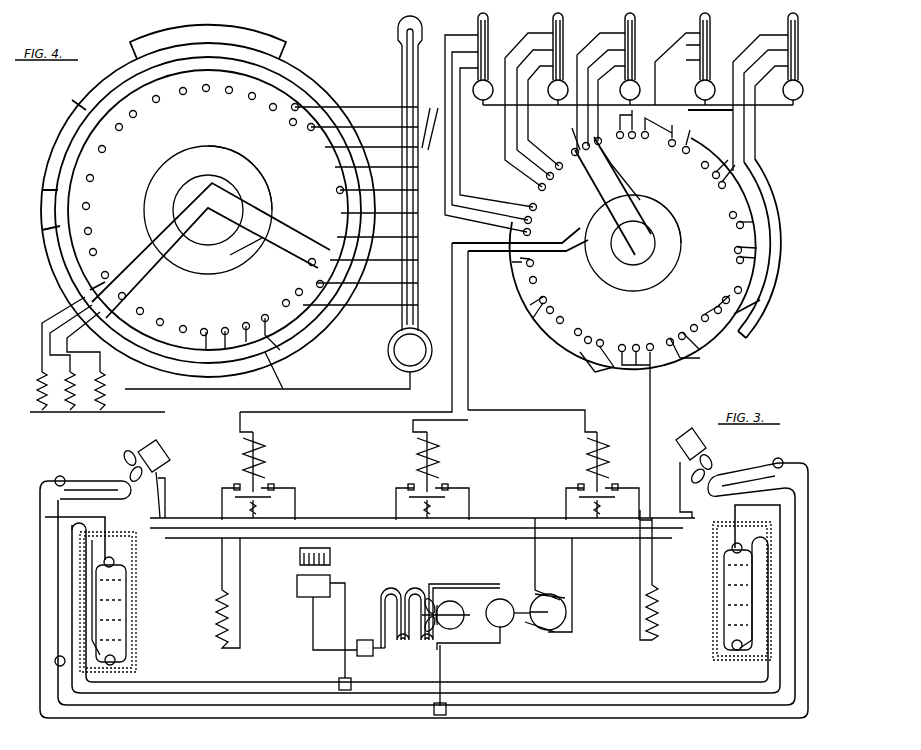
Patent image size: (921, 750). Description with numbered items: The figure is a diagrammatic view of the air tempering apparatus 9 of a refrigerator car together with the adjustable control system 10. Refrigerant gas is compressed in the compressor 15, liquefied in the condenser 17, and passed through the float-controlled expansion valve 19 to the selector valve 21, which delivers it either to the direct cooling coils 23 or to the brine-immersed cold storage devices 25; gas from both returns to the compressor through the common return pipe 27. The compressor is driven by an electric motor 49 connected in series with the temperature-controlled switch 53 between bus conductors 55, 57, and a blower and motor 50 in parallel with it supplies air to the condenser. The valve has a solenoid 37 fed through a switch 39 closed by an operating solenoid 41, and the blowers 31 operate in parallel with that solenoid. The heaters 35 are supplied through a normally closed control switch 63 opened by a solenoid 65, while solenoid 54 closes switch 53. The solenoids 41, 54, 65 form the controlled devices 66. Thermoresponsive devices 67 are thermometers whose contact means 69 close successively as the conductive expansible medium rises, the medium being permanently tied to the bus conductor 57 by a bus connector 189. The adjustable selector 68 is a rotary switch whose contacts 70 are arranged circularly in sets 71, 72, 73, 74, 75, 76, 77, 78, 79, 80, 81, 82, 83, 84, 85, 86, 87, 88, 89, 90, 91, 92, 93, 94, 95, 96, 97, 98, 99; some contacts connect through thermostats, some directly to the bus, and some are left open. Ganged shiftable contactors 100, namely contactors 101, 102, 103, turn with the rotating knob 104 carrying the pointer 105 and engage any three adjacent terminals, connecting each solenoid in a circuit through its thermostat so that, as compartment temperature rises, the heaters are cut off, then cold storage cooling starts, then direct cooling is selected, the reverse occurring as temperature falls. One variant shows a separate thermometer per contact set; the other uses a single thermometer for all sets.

In FIG. 3, the apparatus 9 is at (434, 575).
In FIG. 4, the control system 10 is at (68, 99).
In FIG. 3, the control system 10 is at (781, 330).
In FIG. 3, the compressor 15 is at (508, 613).
In FIG. 3, the condenser 17 is at (402, 594).
In FIG. 3, the expansion valve 19 is at (370, 636).
In FIG. 3, the selector valve 21 is at (327, 632).
In FIG. 3, the direct cooling coils 23 is at (420, 562).
In FIG. 3, the cold storage devices 25 is at (421, 597).
In FIG. 3, the common return pipe 27 is at (97, 718).
In FIG. 3, the blowers 31 is at (143, 452).
In FIG. 3, the heaters 35 is at (212, 618).
In FIG. 3, the solenoid 37 is at (298, 560).
In FIG. 3, the switch 39 is at (262, 490).
In FIG. 4, the operating solenoid 41 is at (53, 353).
In FIG. 3, the operating solenoid 41 is at (262, 452).
In FIG. 3, the electric motor 49 is at (566, 612).
In FIG. 3, the blower and motor 50 is at (461, 656).
In FIG. 3, the temperature-controlled switch 53 is at (440, 488).
In FIG. 3, the operating solenoid 54 is at (438, 448).
In FIG. 4, the bus conductor 55 is at (97, 405).
In FIG. 3, the bus conductor 55 is at (422, 380).
In FIG. 4, the bus conductor 57 is at (95, 357).
In FIG. 3, the bus conductor 57 is at (416, 403).
In FIG. 3, the control switch 63 is at (608, 488).
In FIG. 4, the solenoid 65 is at (86, 361).
In FIG. 3, the solenoid 65 is at (608, 444).
In FIG. 3, the controlled devices 66 is at (225, 462).
In FIG. 4, the thermoresponsive devices 67 is at (387, 54).
In FIG. 4, the adjustable selector 68 is at (249, 178).
In FIG. 3, the adjustable selector 68 is at (680, 224).
In FIG. 4, the contact means 69 is at (430, 119).
In FIG. 3, the contact means 69 is at (800, 60).
In FIG. 3, the contacts 70 is at (558, 154).
In FIG. 4, the contact set 71 is at (306, 132).
In FIG. 3, the contact set 71 is at (538, 220).
In FIG. 4, the contact set 72 is at (332, 191).
In FIG. 3, the contact set 72 is at (554, 183).
In FIG. 4, the contact set 73 is at (318, 253).
In FIG. 3, the contact set 73 is at (600, 155).
In FIG. 4, the contact set 74 is at (261, 101).
In FIG. 3, the contact set 74 is at (645, 136).
In FIG. 4, the contact set 75 is at (95, 178).
In FIG. 4, the contact set 76 is at (280, 304).
In FIG. 4, the contact set 77 is at (131, 118).
In FIG. 4, the contact set 78 is at (241, 94).
In FIG. 3, the contact set 78 is at (677, 149).
In FIG. 4, the contact set 79 is at (91, 202).
In FIG. 3, the contact set 79 is at (716, 174).
In FIG. 4, the contact set 80 is at (94, 245).
In FIG. 4, the contact set 81 is at (116, 132).
In FIG. 4, the contact set 82 is at (281, 110).
In FIG. 4, the contact set 83 is at (103, 154).
In FIG. 4, the contact set 84 is at (105, 267).
In FIG. 4, the contact set 85 is at (152, 101).
In FIG. 3, the contact set 85 is at (732, 220).
In FIG. 4, the contact set 86 is at (196, 93).
In FIG. 3, the contact set 86 is at (734, 256).
In FIG. 4, the contact set 87 is at (292, 290).
In FIG. 4, the contact set 88 is at (219, 94).
In FIG. 4, the contact set 89 is at (91, 225).
In FIG. 4, the contact set 90 is at (290, 114).
In FIG. 3, the contact set 90 is at (719, 304).
In FIG. 4, the contact set 91 is at (177, 94).
In FIG. 3, the contact set 91 is at (684, 336).
In FIG. 4, the contact set 92 is at (239, 326).
In FIG. 4, the contact set 93 is at (217, 327).
In FIG. 4, the contact set 94 is at (195, 328).
In FIG. 4, the contact set 95 is at (173, 324).
In FIG. 3, the contact set 95 is at (589, 331).
In FIG. 4, the contact set 96 is at (152, 315).
In FIG. 3, the contact set 96 is at (551, 308).
In FIG. 4, the contact set 97 is at (259, 316).
In FIG. 3, the contact set 97 is at (532, 270).
In FIG. 4, the contact set 98 is at (116, 287).
In FIG. 3, the contact set 98 is at (636, 421).
In FIG. 4, the contact set 99 is at (133, 303).
In FIG. 3, the shiftable contactors 100 is at (574, 143).
In FIG. 4, the contactor 101 is at (314, 218).
In FIG. 3, the contactor 101 is at (592, 178).
In FIG. 4, the contactor 102 is at (318, 248).
In FIG. 3, the contactor 102 is at (607, 178).
In FIG. 4, the contactor 103 is at (312, 273).
In FIG. 3, the contactor 103 is at (615, 176).
In FIG. 4, the rotating knob 104 is at (210, 150).
In FIG. 3, the rotating knob 104 is at (642, 284).
In FIG. 4, the pointer 105 is at (265, 258).
In FIG. 3, the pointer 105 is at (620, 188).
In FIG. 4, the bus connector 189 is at (300, 380).
In FIG. 3, the bus connector 189 is at (596, 378).